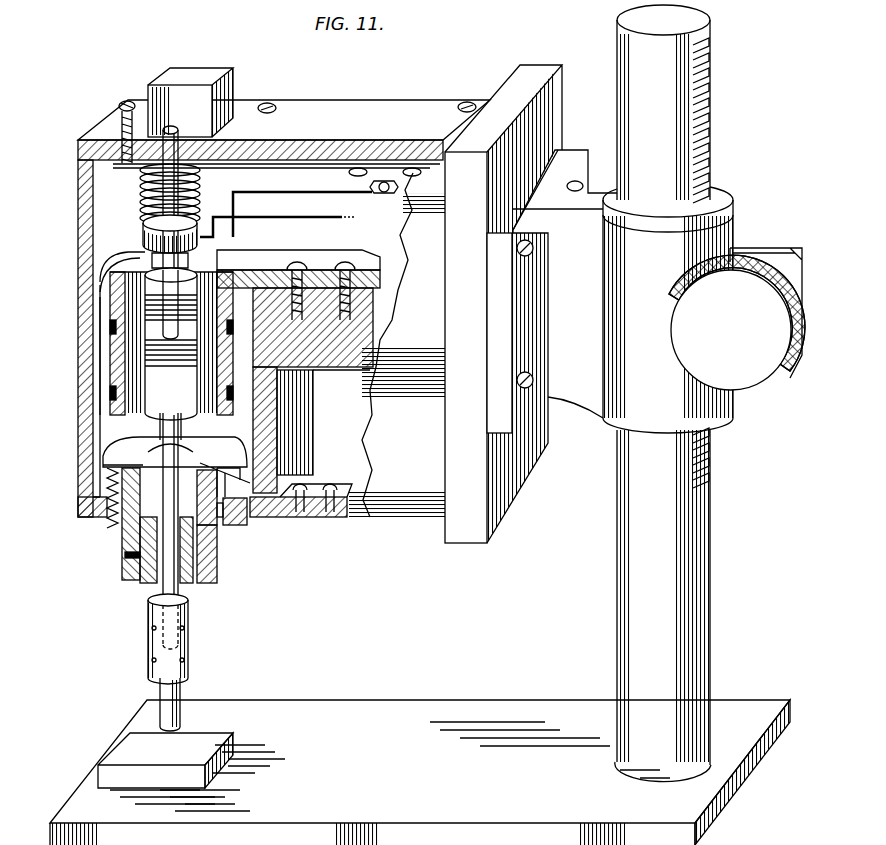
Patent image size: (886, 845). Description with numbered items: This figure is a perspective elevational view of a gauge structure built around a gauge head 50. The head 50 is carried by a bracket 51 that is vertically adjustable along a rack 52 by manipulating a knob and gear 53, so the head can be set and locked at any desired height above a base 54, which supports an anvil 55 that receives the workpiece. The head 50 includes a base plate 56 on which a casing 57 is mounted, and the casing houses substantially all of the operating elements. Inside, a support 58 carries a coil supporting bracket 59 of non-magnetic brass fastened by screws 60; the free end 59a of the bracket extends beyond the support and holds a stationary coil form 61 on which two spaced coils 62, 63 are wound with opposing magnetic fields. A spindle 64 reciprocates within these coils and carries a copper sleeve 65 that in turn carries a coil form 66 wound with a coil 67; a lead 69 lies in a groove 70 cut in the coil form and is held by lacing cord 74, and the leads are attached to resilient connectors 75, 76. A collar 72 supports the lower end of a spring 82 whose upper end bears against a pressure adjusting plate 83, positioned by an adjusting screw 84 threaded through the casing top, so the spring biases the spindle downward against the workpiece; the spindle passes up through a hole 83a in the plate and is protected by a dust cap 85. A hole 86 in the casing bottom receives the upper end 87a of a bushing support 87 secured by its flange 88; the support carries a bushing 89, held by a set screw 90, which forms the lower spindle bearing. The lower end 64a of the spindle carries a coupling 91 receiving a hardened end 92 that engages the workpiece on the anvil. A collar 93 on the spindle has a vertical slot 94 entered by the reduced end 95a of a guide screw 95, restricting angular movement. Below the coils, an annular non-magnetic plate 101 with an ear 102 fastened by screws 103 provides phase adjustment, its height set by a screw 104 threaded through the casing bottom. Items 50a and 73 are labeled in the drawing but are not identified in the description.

The gauge head 50 is at (446, 98).
The housing inner wall 50a is at (100, 299).
The bracket 51 is at (600, 195).
The rack 52 is at (711, 523).
The knob and gear 53 is at (783, 380).
The base 54 is at (387, 702).
The anvil 55 is at (218, 739).
The base plate 56 is at (528, 64).
The casing 57 is at (344, 102).
The support 58 is at (338, 370).
The coil supporting bracket 59 is at (268, 257).
The free end 59a is at (114, 262).
The screws 60 is at (345, 264).
The stationary coil form 61 is at (110, 313).
The coil 62 is at (112, 331).
The coil 63 is at (112, 394).
The spindle 64 is at (179, 131).
The lower end 64a is at (189, 635).
The sleeve 65 is at (162, 421).
The coil form 66 is at (150, 377).
The coil 67 is at (196, 346).
The lead 69 is at (181, 300).
The groove 70 is at (105, 283).
The collar 72 is at (150, 231).
The contact lug 73 is at (143, 243).
The lacing cord 74 is at (196, 298).
The resilient connector 75 is at (247, 193).
The resilient connector 76 is at (246, 218).
The spring 82 is at (147, 196).
The pressure adjusting plate 83 is at (223, 169).
The hole 83a is at (236, 141).
The adjusting screw 84 is at (118, 107).
The dust cap 85 is at (198, 78).
The hole 86 is at (222, 531).
The bushing support 87 is at (214, 582).
The upper end 87a is at (94, 509).
The flange 88 is at (247, 518).
The bushing 89 is at (150, 590).
The set screw 90 is at (125, 558).
The coupling 91 is at (148, 627).
The hardened end 92 is at (183, 696).
The collar 93 is at (122, 540).
The vertical slot 94 is at (205, 470).
The guide screw 95 is at (212, 527).
The inner reduced end 95a is at (216, 545).
The adjustable non-magnetic metallic plate 101 is at (113, 449).
The ear 102 is at (300, 517).
The screws 103 is at (326, 488).
The screw 104 is at (105, 484).